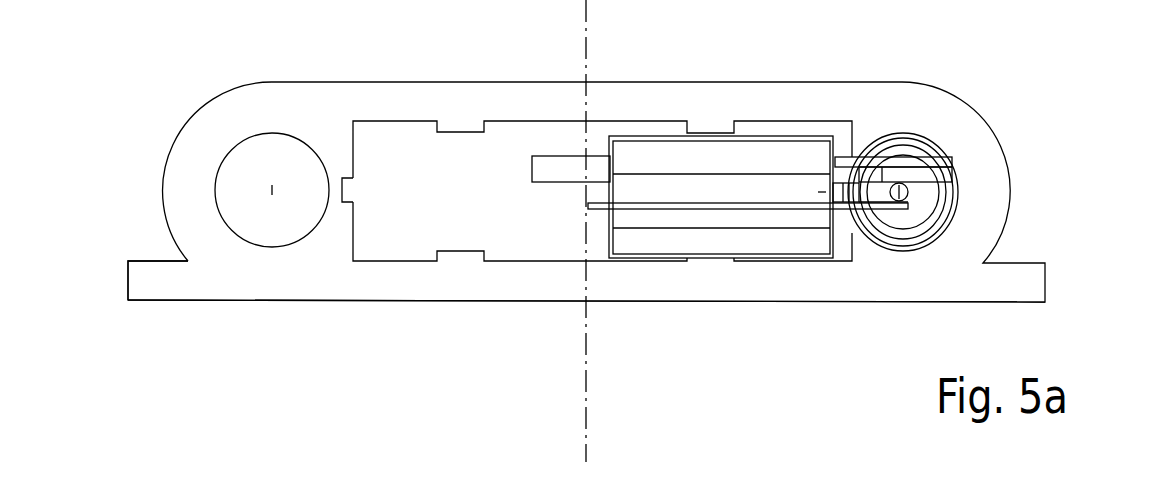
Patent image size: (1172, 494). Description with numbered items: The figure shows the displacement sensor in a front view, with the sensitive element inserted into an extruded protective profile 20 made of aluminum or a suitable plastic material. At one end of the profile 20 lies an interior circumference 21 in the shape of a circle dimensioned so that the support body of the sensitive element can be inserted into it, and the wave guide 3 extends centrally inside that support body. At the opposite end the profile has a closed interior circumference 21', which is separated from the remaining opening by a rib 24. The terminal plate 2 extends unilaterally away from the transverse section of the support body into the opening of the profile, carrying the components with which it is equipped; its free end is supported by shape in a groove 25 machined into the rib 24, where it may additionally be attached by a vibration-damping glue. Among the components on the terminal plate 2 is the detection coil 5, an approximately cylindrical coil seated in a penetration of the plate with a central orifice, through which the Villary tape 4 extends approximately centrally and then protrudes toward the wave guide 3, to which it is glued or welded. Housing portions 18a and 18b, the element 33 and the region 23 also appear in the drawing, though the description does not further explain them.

The protective profile 20 is at (234, 81).
The interior circumference 21 is at (964, 178).
The closed interior circumference 21' is at (217, 138).
The groove 25 is at (349, 186).
The upper housing part 18a is at (618, 80).
The lower housing part 18b is at (613, 298).
The detection coil 5 is at (740, 157).
The terminal plate 2 is at (550, 169).
The Villary tape 4 is at (698, 205).
The push rod 33 is at (857, 210).
The wave guide 3 is at (892, 201).
The rib 24 is at (323, 242).
The receiving slot 23 is at (585, 250).